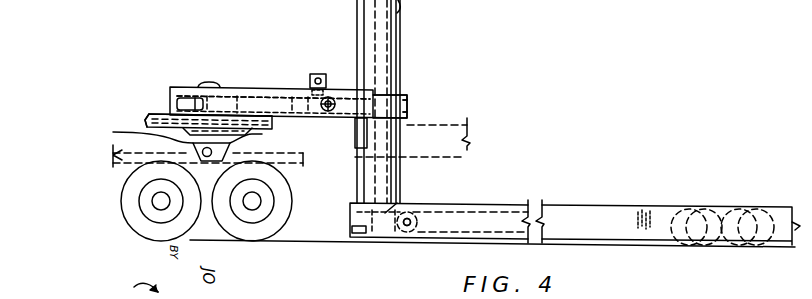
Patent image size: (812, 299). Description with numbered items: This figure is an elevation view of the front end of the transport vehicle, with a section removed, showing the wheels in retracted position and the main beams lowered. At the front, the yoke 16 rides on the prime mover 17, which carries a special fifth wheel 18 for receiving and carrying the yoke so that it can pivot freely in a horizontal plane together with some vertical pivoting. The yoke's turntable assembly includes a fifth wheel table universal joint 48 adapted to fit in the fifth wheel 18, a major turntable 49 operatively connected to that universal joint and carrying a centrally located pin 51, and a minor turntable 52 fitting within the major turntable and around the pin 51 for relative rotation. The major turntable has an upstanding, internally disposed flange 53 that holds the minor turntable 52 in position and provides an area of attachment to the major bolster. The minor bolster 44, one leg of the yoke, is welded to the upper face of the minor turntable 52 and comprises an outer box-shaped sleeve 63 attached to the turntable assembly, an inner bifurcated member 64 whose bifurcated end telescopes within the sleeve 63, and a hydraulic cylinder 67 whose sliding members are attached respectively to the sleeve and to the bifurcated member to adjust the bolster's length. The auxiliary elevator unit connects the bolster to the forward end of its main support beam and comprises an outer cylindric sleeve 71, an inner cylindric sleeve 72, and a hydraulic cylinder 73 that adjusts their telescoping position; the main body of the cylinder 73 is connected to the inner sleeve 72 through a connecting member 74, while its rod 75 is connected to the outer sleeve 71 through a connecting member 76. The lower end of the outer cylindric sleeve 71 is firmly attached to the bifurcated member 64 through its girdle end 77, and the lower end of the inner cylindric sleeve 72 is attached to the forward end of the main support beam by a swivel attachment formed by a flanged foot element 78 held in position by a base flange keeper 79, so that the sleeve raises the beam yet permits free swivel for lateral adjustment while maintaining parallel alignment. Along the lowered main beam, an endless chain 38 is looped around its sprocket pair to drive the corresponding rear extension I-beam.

The yoke 16 is at (308, 46).
The prime mover 17 is at (226, 246).
The fifth wheel 18 is at (200, 138).
The endless chain 38 is at (478, 206).
The minor bolster 44 is at (328, 117).
The fifth wheel table universal joint 48 is at (251, 136).
The major turntable 49 is at (142, 118).
The pin 51 is at (207, 84).
The minor turntable 52 is at (162, 114).
The flange 53 is at (146, 116).
The outer box-shaped sleeve 63 is at (270, 88).
The inner bifurcated member 64 is at (408, 100).
The hydraulic cylinder 67 is at (246, 98).
The outer cylindric sleeve 71 is at (357, 51).
The inner cylindric sleeve 72 is at (358, 174).
The hydraulic cylinder 73 is at (383, 163).
The connecting member 74 is at (388, 212).
The rod 75 is at (383, 50).
The connecting member 76 is at (400, 5).
The girdle end 77 is at (408, 116).
The flanged foot element 78 is at (386, 233).
The base flange keeper 79 is at (398, 228).